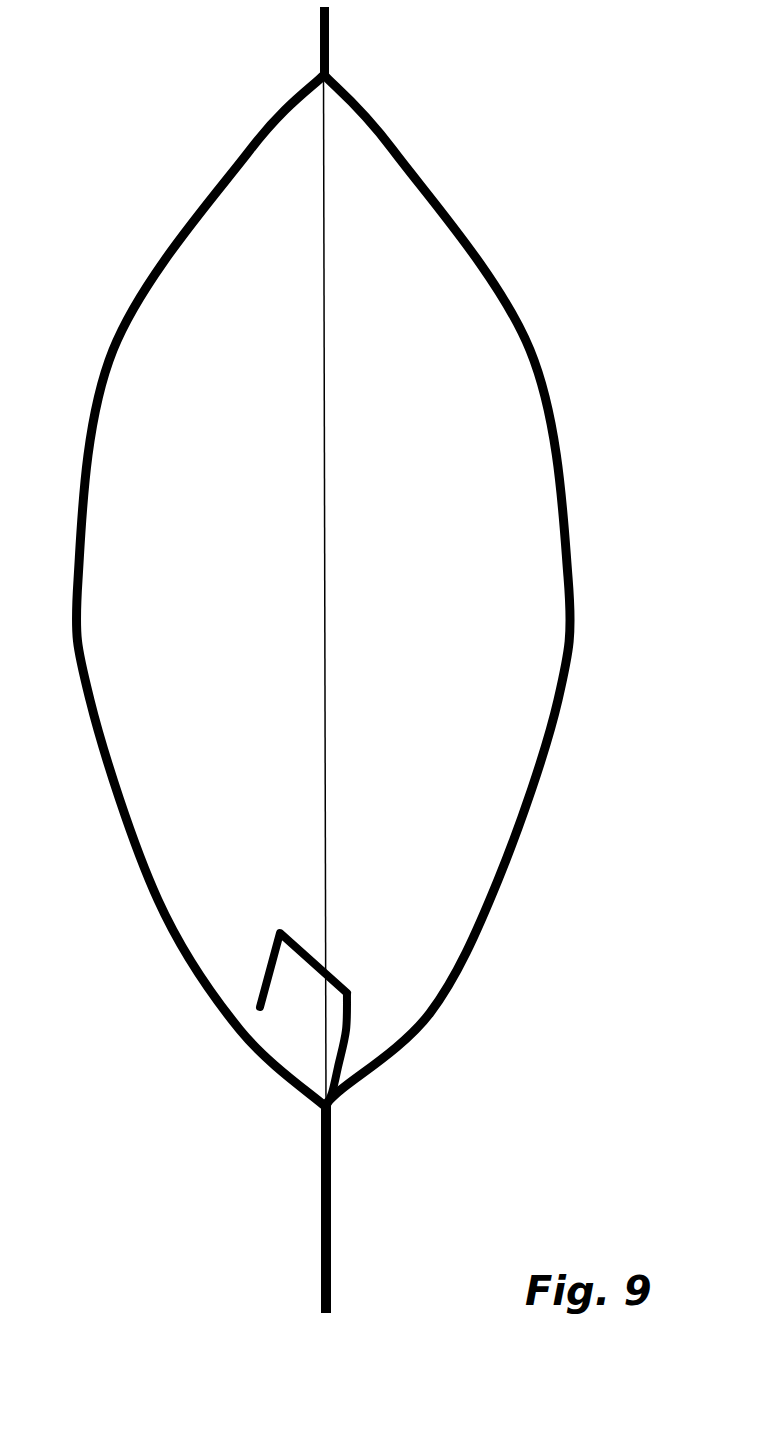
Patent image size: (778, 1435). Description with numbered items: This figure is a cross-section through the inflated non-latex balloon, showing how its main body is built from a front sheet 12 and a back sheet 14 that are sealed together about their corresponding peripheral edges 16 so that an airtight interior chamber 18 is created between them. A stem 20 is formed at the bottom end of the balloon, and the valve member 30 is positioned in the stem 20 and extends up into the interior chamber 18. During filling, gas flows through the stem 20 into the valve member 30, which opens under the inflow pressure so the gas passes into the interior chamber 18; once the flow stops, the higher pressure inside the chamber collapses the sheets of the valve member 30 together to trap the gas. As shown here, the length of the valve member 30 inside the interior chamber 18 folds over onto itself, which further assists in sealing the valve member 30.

The front sheet 12 is at (175, 943).
The back sheet 14 is at (503, 868).
The peripheral edges 16 is at (329, 33).
The interior chamber 18 is at (522, 623).
The stem 20 is at (321, 1205).
The valve member 30 is at (352, 992).